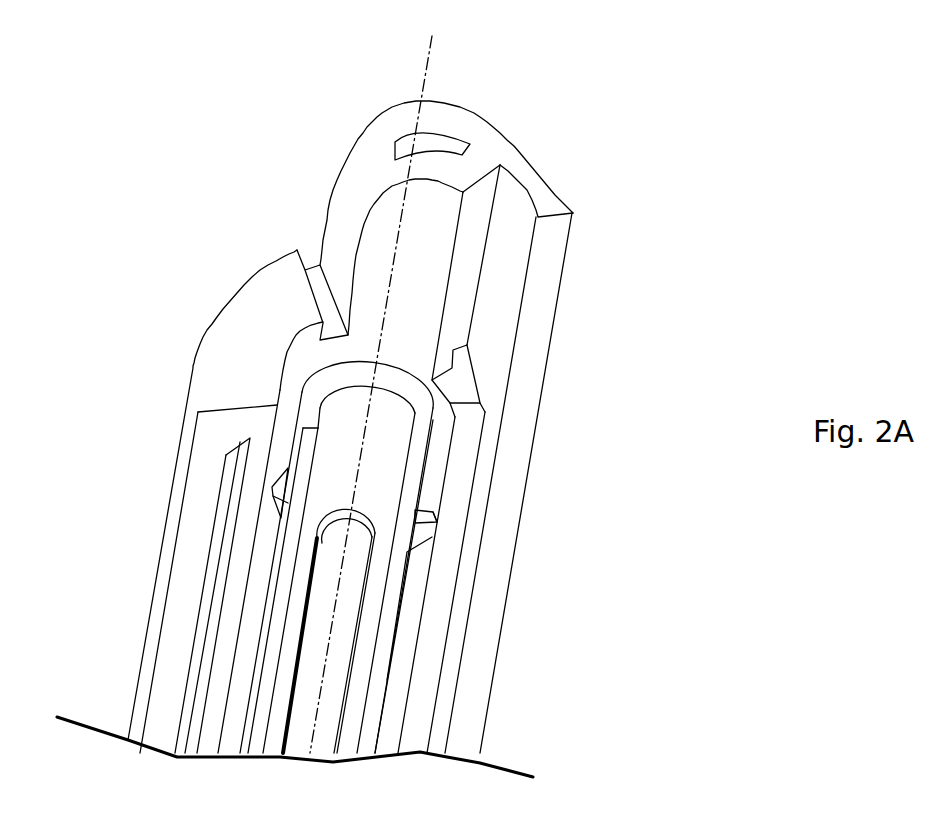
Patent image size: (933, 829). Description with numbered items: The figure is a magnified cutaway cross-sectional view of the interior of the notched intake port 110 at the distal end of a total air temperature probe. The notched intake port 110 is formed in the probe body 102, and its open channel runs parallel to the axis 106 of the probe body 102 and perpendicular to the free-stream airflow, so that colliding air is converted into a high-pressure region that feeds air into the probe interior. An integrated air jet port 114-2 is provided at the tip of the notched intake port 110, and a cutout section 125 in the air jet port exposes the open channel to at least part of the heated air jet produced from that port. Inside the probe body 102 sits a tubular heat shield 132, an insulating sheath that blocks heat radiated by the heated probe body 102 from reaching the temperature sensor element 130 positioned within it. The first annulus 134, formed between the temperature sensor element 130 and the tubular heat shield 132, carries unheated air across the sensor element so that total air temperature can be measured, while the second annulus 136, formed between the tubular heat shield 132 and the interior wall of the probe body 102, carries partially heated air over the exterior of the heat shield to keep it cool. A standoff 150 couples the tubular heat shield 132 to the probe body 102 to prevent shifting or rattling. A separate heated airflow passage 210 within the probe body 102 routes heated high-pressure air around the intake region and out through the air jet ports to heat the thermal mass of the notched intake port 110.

The probe body 102 is at (155, 596).
The axis 106 is at (432, 56).
The notched intake port 110 is at (672, 335).
The air jet port 114-2 is at (525, 192).
The cutout section 125 is at (457, 398).
The temperature sensor element 130 is at (350, 590).
The tubular heat shield 132 is at (415, 463).
The first annulus 134 is at (391, 443).
The second annulus 136 is at (288, 402).
The standoff 150 is at (272, 496).
The heated airflow passage 210 is at (202, 599).